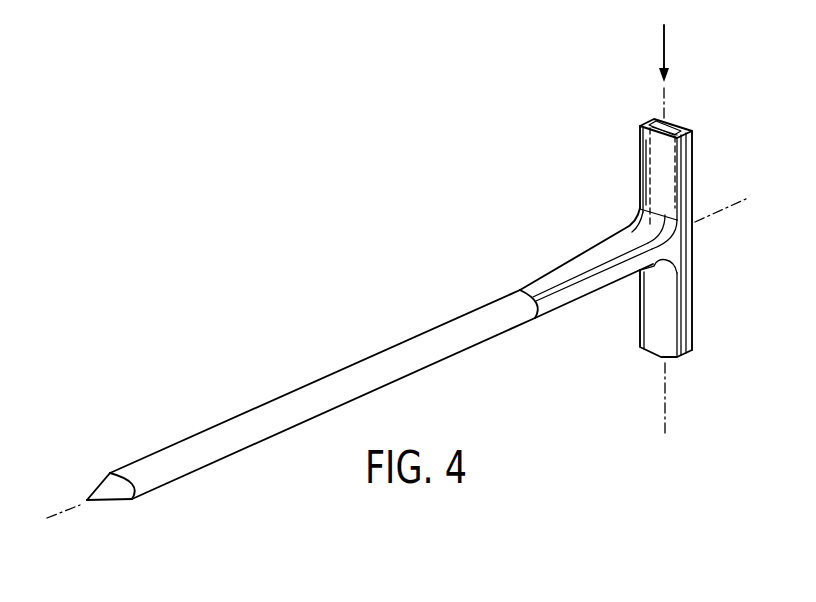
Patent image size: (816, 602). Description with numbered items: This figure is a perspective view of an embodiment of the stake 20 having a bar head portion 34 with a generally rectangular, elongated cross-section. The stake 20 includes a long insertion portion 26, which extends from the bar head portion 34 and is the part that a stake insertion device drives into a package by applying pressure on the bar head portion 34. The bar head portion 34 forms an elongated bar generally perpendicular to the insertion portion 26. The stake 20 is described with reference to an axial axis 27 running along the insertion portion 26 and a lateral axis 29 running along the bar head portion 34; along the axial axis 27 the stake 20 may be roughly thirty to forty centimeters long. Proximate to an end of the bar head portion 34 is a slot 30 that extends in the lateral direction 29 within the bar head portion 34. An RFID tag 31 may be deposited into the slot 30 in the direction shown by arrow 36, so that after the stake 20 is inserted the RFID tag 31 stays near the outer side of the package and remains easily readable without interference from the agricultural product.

The stake 20 is at (208, 232).
The insertion portion 26 is at (315, 382).
The axial axis 27 is at (60, 508).
The lateral axis 29 is at (662, 393).
The slot 30 is at (650, 166).
The RFID tag 31 is at (664, 190).
The bar head portion 34 is at (696, 286).
The arrow 36 is at (666, 42).